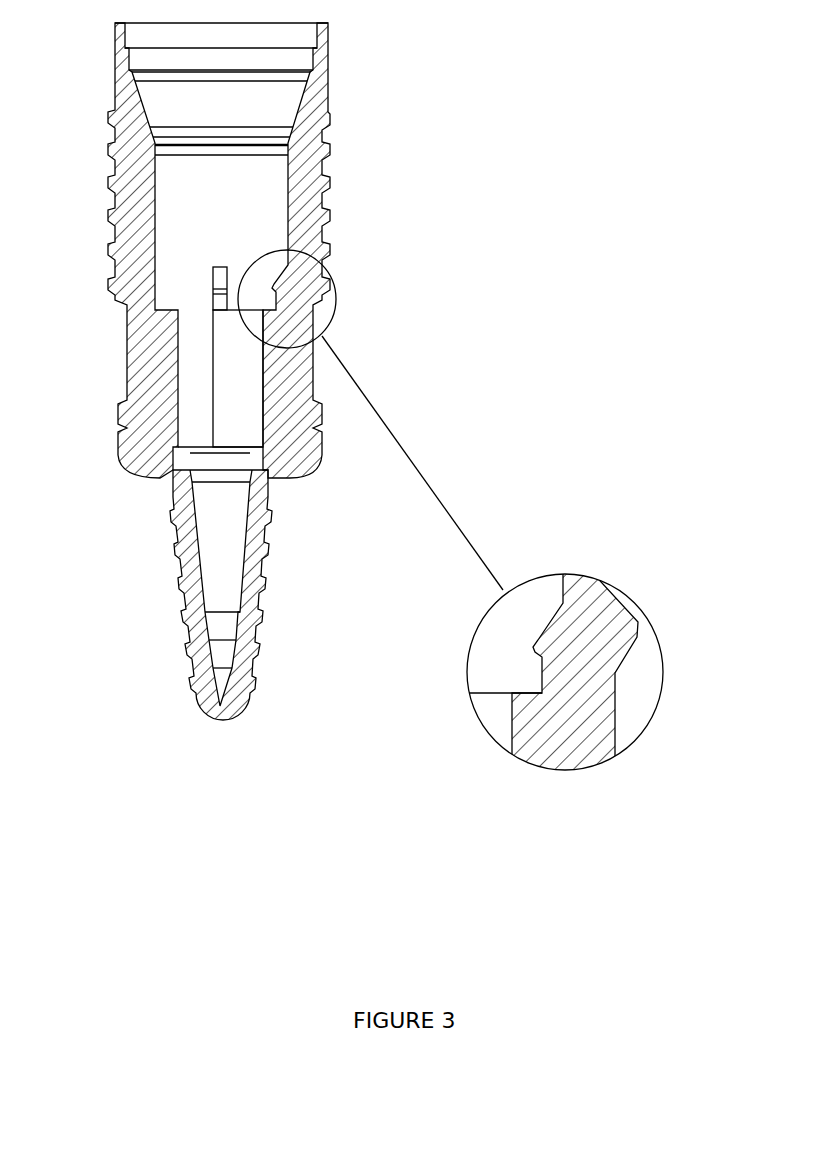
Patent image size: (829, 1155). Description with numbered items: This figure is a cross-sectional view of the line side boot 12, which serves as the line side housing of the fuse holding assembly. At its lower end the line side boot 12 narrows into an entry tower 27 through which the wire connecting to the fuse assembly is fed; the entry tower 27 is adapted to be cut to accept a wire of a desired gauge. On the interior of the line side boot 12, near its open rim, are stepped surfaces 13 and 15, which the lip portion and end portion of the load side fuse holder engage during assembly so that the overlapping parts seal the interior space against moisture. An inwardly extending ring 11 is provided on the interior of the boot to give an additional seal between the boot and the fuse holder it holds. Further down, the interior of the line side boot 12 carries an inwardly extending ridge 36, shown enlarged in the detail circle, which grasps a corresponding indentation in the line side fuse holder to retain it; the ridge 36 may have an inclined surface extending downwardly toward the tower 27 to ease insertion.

The inwardly extending ring 11 is at (289, 144).
The line side boot 12 is at (310, 196).
The stepped surface 13 is at (125, 52).
The stepped surface 15 is at (131, 75).
The entry tower 27 is at (180, 540).
The inwardly extending ridge 36 is at (276, 285).